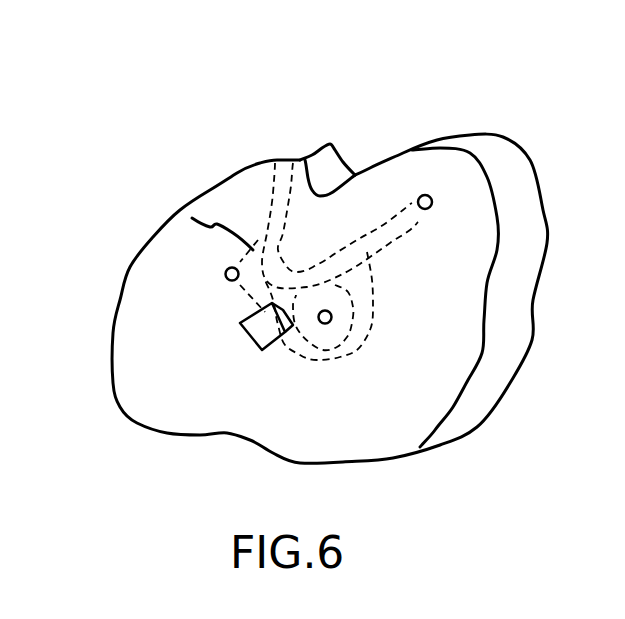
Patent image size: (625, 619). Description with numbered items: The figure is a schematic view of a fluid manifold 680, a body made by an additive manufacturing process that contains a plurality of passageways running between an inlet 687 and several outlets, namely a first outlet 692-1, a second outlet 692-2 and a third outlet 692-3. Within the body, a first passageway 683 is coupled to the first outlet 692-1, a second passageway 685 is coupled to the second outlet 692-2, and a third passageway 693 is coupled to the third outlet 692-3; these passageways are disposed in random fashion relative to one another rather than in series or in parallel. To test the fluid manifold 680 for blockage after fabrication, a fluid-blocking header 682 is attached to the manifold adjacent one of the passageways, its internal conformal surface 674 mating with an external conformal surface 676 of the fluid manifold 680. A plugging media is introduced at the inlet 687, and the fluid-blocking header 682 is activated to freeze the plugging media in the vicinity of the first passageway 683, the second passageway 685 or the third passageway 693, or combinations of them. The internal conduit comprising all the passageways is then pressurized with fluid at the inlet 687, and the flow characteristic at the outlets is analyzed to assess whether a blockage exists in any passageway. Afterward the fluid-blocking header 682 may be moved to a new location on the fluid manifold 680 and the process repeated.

The fluid manifold 680 is at (71, 112).
The inlet 687 is at (285, 140).
The third passageway 693 is at (387, 227).
The first passageway 683 is at (192, 218).
The first outlet 692-1 is at (225, 280).
The second outlet 692-2 is at (331, 321).
The third outlet 692-3 is at (431, 207).
The second passageway 685 is at (305, 303).
The fluid-blocking header 682 is at (263, 327).
The internal conformal surface 674 is at (285, 337).
The external conformal surface 676 is at (225, 340).